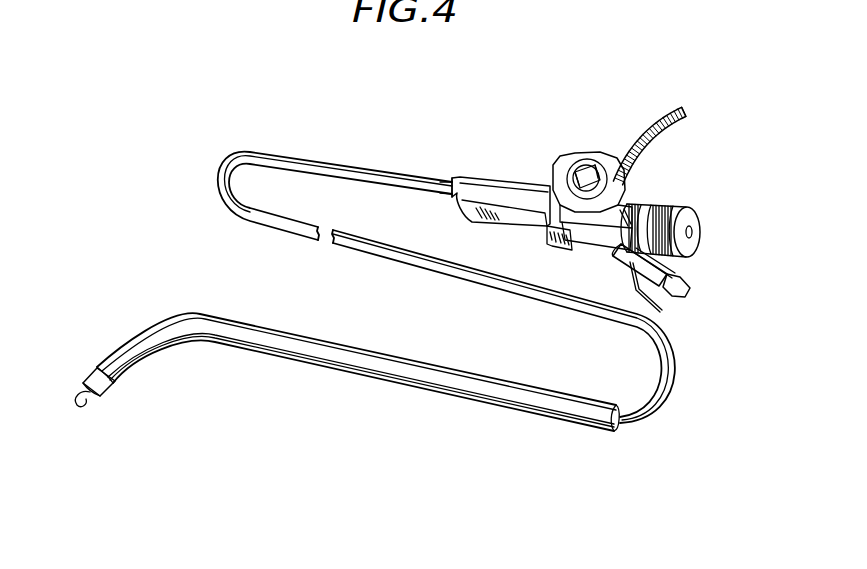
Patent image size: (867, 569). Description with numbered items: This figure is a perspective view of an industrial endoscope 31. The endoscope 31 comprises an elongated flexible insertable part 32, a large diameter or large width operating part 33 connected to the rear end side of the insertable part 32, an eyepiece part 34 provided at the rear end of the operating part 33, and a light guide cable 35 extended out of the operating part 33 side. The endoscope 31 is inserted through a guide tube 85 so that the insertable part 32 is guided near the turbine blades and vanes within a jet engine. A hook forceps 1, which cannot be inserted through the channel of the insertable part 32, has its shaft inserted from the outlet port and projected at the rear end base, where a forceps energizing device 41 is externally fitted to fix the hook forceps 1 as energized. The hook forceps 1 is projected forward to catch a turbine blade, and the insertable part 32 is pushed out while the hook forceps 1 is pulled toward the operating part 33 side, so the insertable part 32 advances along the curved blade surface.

The hook forceps 1 is at (88, 403).
The industrial endoscope 31 is at (477, 173).
The insertable part 32 is at (262, 221).
The operating part 33 is at (528, 178).
The eyepiece part 34 is at (697, 246).
The light guide cable 35 is at (645, 125).
The forceps energizing device 41 is at (700, 293).
The guide tube 85 is at (177, 318).